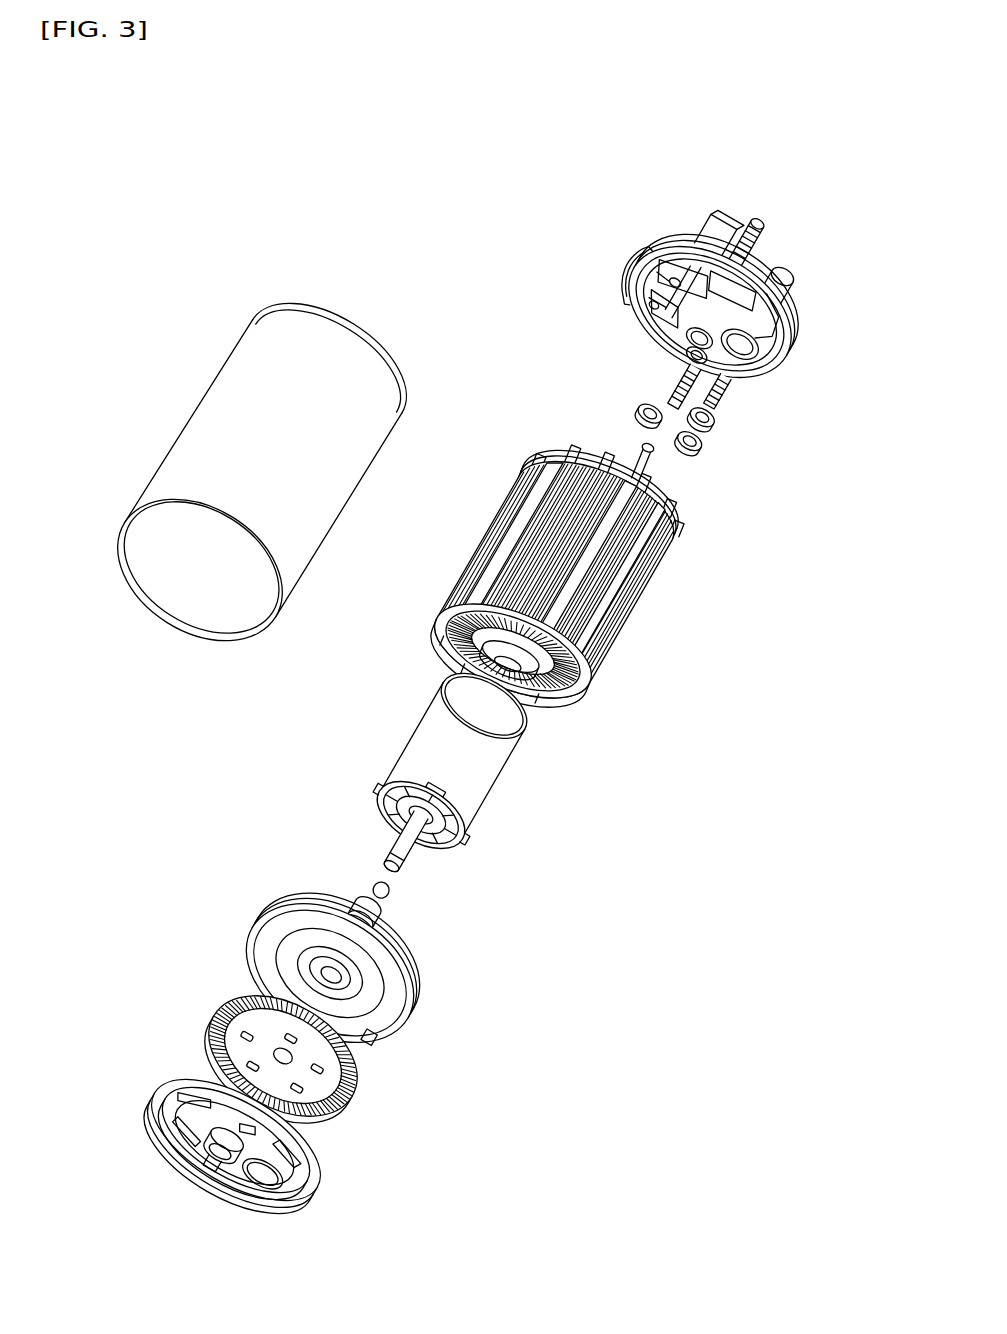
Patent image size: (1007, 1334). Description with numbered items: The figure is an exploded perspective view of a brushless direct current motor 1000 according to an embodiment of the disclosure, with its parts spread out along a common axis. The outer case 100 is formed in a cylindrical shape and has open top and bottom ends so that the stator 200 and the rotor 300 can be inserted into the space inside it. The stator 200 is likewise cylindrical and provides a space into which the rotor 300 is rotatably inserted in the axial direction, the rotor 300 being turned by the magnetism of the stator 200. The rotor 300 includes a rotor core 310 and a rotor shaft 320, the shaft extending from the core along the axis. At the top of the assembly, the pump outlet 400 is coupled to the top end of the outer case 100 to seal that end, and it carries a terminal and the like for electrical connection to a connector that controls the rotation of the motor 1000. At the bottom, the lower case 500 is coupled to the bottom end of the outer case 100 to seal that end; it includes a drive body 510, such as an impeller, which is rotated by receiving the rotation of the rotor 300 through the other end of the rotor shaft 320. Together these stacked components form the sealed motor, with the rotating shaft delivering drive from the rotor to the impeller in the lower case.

The brushless direct current (BLDC) motor 1000 is at (388, 196).
The outer case 100 is at (156, 395).
The stator 200 is at (684, 654).
The rotor 300 is at (532, 810).
The rotor core 310 is at (441, 728).
The rotor shaft 320 is at (397, 843).
The pump outlet 400 is at (600, 262).
The lower case 500 is at (429, 1048).
The drive body 510 is at (233, 1003).